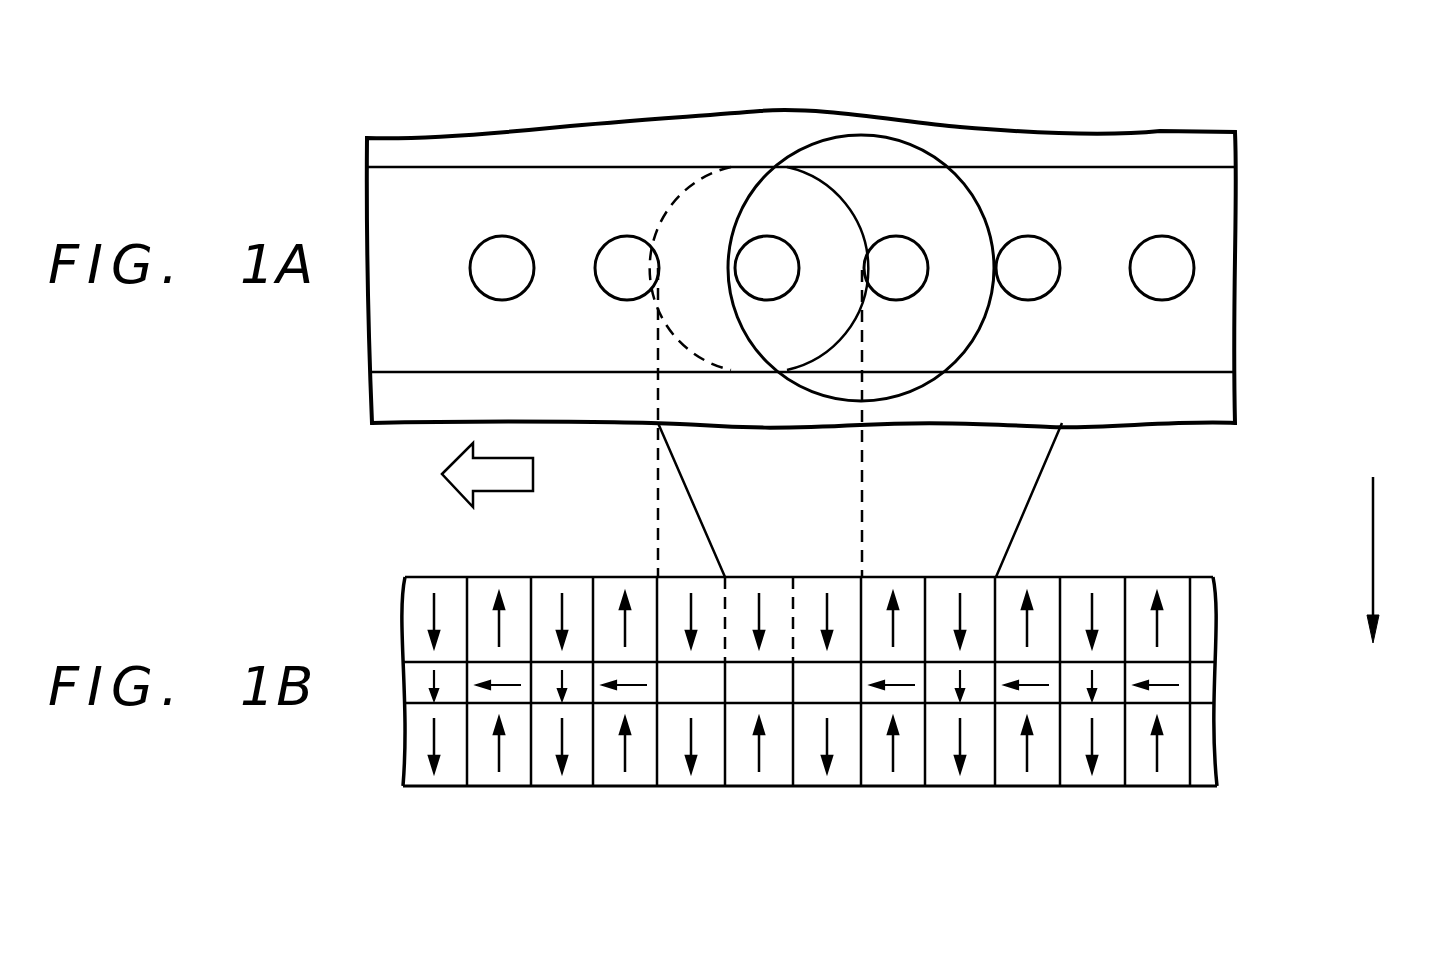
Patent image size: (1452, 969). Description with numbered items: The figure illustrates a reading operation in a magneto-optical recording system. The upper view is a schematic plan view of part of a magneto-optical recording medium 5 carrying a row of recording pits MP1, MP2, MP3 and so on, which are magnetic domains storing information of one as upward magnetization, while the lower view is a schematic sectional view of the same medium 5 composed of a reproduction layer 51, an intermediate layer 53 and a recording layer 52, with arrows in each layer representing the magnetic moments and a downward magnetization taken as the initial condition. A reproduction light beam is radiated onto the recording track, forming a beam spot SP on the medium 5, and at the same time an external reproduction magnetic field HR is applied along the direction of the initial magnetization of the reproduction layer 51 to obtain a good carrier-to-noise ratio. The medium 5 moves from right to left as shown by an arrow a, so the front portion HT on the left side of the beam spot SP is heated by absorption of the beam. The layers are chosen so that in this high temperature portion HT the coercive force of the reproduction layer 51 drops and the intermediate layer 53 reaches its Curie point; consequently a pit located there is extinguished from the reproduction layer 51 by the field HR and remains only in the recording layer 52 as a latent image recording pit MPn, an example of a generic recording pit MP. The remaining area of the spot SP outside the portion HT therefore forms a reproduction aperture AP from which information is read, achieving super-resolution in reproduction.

In FIG. 1A, the magneto-optical recording medium 5 is at (400, 137).
In FIG. 1B, the magneto-optical recording medium 5 is at (825, 678).
In FIG. 1A, the high temperature portion HT is at (716, 195).
In FIG. 1B, the high temperature portion HT is at (862, 545).
In FIG. 1A, the spot of the reproduction light beam SP is at (980, 190).
In FIG. 1B, the spot of the reproduction light beam SP is at (727, 495).
In FIG. 1A, the reproduction aperture AP is at (905, 185).
In FIG. 1A, the recording pit MP is at (898, 163).
In FIG. 1A, the latent image recording pit MPn is at (792, 250).
In FIG. 1B, the latent image recording pit MPn is at (748, 772).
In FIG. 1A, the recording pit MP1 is at (920, 252).
In FIG. 1B, the recording pit MP1 is at (906, 592).
In FIG. 1A, the recording pit MP2 is at (1056, 251).
In FIG. 1B, the recording pit MP2 is at (1048, 592).
In FIG. 1A, the recording pit MP3 is at (1190, 249).
In FIG. 1B, the recording pit MP3 is at (1177, 652).
In FIG. 1A, the arrow a is at (507, 492).
In FIG. 1B, the reproduction magnetic field HR is at (1375, 540).
In FIG. 1B, the reproduction layer 51 is at (1203, 636).
In FIG. 1B, the recording layer 52 is at (1203, 755).
In FIG. 1B, the intermediate layer 53 is at (1203, 692).